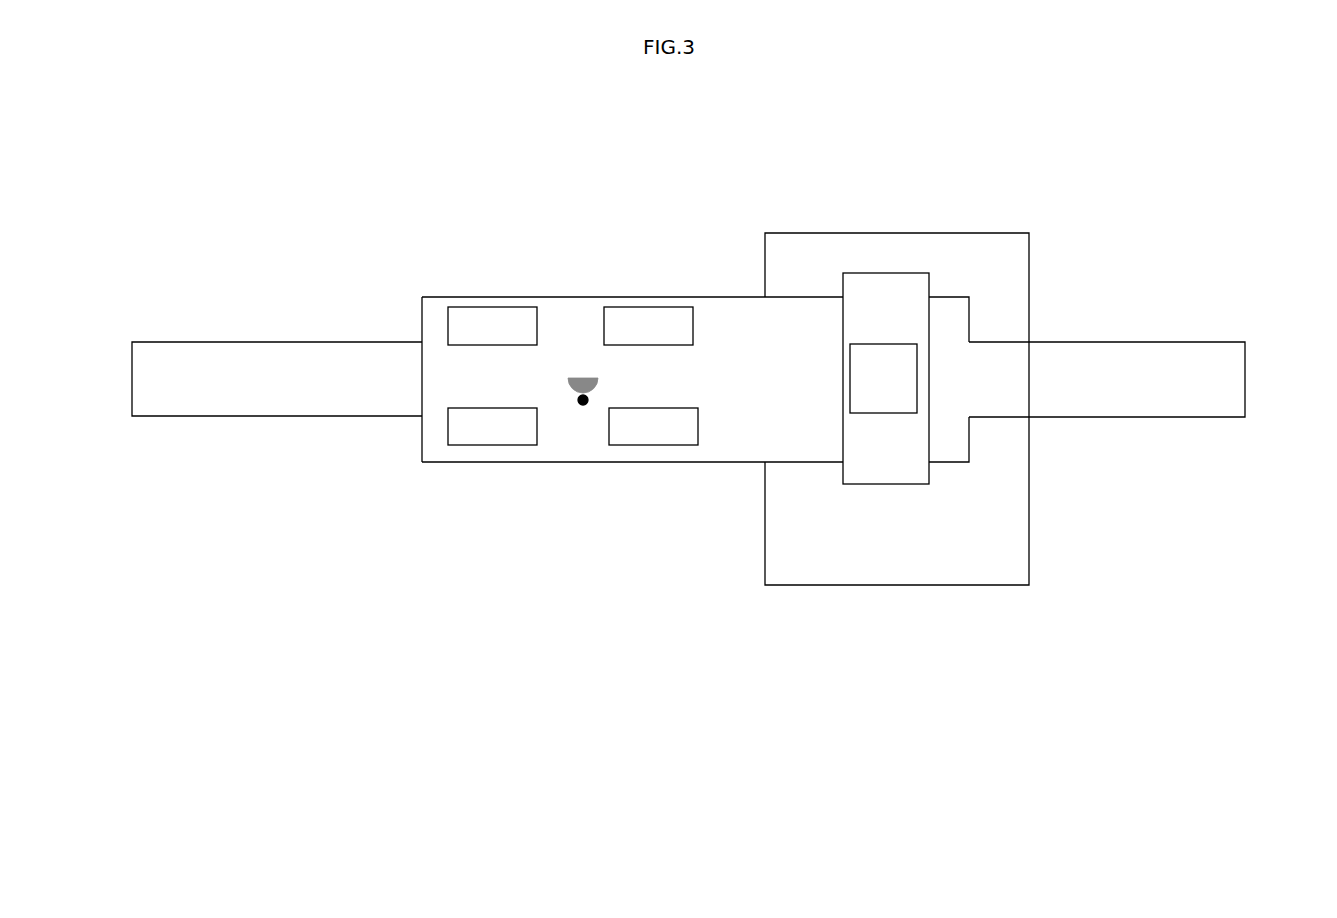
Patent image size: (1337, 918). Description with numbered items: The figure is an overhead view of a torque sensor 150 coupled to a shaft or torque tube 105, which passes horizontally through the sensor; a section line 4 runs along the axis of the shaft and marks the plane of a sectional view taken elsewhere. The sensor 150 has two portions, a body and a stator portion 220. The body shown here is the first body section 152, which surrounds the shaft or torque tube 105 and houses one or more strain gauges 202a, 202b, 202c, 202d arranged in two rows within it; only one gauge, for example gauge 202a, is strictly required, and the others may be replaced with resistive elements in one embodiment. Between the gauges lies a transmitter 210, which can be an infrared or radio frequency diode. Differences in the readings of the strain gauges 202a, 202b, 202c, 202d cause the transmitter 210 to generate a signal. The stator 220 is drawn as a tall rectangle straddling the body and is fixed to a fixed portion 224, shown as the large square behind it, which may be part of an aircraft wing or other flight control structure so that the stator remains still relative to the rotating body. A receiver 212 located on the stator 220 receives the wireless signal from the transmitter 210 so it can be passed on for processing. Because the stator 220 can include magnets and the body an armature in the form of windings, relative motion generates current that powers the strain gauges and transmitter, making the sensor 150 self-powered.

The section line 4- 4 is at (1323, 378).
The shaft or torque tube 105 is at (290, 340).
The sensor 150 is at (385, 462).
The first body section 152 is at (765, 308).
The strain gauge 202a is at (490, 305).
The strain gauge 202b is at (648, 307).
The strain gauge 202c is at (492, 460).
The strain gauge 202d is at (653, 447).
The transmitter 210 is at (582, 378).
The receiver 212 is at (921, 378).
The stator portion 220 is at (887, 273).
The fixed portion 224 is at (967, 527).